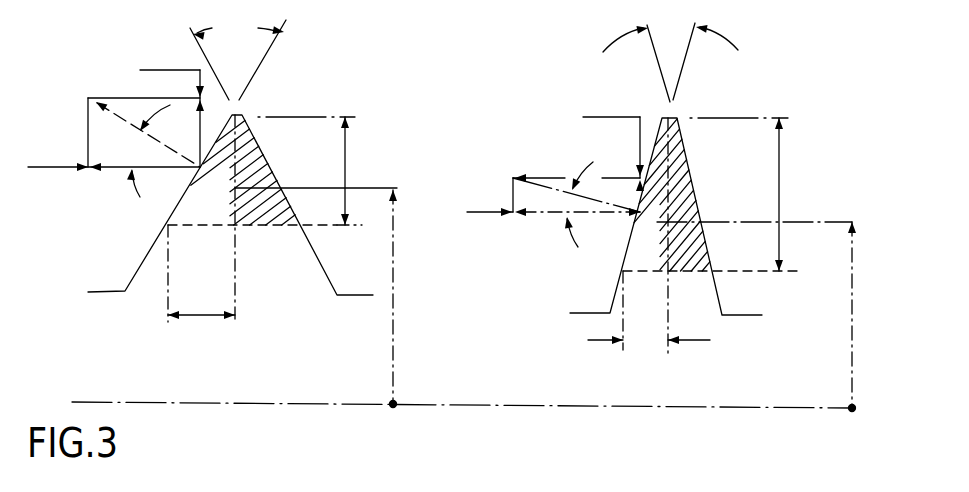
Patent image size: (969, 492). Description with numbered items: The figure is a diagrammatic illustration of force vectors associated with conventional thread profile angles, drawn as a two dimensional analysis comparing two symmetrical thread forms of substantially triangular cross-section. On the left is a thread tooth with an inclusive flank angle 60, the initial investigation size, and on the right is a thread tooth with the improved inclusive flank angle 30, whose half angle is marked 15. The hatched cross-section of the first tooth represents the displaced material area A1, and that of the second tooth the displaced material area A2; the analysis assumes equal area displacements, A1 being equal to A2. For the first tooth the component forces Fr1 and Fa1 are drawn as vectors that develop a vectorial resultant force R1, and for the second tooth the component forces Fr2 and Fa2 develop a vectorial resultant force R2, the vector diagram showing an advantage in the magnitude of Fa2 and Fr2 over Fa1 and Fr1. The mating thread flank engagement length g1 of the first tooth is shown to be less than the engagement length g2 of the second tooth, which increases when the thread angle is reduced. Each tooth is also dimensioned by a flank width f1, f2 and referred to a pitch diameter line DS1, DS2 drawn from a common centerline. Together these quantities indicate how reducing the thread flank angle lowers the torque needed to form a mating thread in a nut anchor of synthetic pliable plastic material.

The displaced material area of the sixty degree thread A1 is at (242, 218).
The mating thread flank engagement length of the sixty degree thread g1 is at (364, 171).
The half flank width of first thread f1 is at (201, 273).
The pitch diameter of first thread DS1 is at (394, 293).
The radial component force of the sixty degree thread Fr1 is at (167, 106).
The vectorial resultant force of the sixty degree thread R1 is at (85, 97).
The axial component force of the sixty degree thread Fa1 is at (107, 161).
The sixty degree inclusive thread flank angle 60 is at (190, 92).
The displaced material area of the thirty degree thread A2 is at (711, 238).
The mating thread flank engagement length of the thirty degree thread g2 is at (803, 194).
The half flank width of second thread f2 is at (649, 320).
The pitch diameter of second thread DS2 is at (851, 371).
The radial component force of the thirty degree thread Fr2 is at (610, 140).
The vectorial resultant force of the thirty degree thread R2 is at (508, 174).
The axial component force of the thirty degree thread Fa2 is at (538, 199).
The half flank angle of second thread (15 degrees) 15 is at (576, 215).
The thirty degree inclusive thread flank angle 30 is at (670, 56).